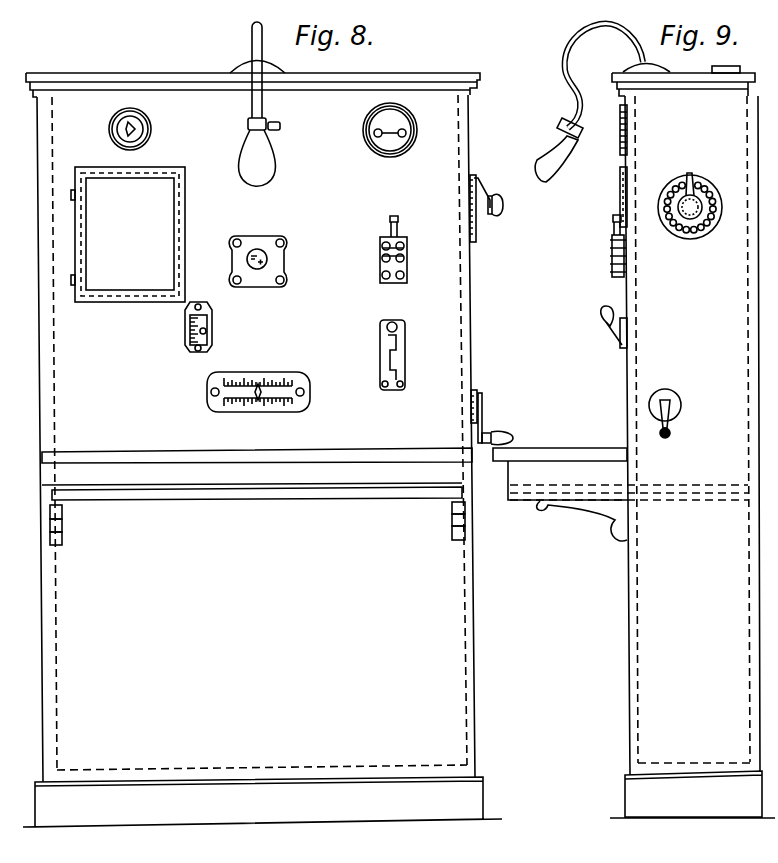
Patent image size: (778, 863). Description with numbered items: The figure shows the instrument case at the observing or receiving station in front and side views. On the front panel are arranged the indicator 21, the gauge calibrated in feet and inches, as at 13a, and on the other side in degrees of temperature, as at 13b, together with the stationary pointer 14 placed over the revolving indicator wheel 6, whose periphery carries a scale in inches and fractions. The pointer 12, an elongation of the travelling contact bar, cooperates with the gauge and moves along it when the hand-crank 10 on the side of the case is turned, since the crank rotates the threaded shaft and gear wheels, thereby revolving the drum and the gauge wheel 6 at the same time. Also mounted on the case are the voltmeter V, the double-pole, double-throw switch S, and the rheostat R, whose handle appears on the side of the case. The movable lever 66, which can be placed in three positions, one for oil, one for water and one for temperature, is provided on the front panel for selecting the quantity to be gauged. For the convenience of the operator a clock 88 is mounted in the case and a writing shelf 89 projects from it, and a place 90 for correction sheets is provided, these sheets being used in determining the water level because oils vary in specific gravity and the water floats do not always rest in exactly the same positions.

In FIG. 8, the clock 88 is at (151, 127).
In FIG. 8, the voltmeter V is at (414, 136).
In FIG. 9, the voltmeter V is at (620, 140).
In FIG. 8, the place for correction sheets 90 is at (160, 219).
In FIG. 9, the place for correction sheets 90 is at (620, 190).
In FIG. 8, the indicator 21 is at (268, 257).
In FIG. 8, the stationary pointer 14 is at (206, 338).
In FIG. 8, the indicator wheel 6 is at (196, 350).
In FIG. 8, the pointer 12 is at (259, 386).
In FIG. 8, the gauge scale in feet and inches 13a is at (290, 404).
In FIG. 8, the gauge scale in degrees of temperature 13b is at (294, 383).
In FIG. 8, the writing shelf 89 is at (185, 440).
In FIG. 9, the writing shelf 89 is at (592, 443).
In FIG. 8, the double-pole, double-throw switch S is at (408, 250).
In FIG. 9, the double-pole, double-throw switch S is at (612, 256).
In FIG. 8, the movable lever 66 is at (398, 323).
In FIG. 9, the movable lever 66 is at (610, 340).
In FIG. 8, the rheostat R is at (478, 240).
In FIG. 9, the rheostat R is at (693, 240).
In FIG. 8, the hand-crank 10 is at (511, 435).
In FIG. 9, the hand-crank 10 is at (672, 432).